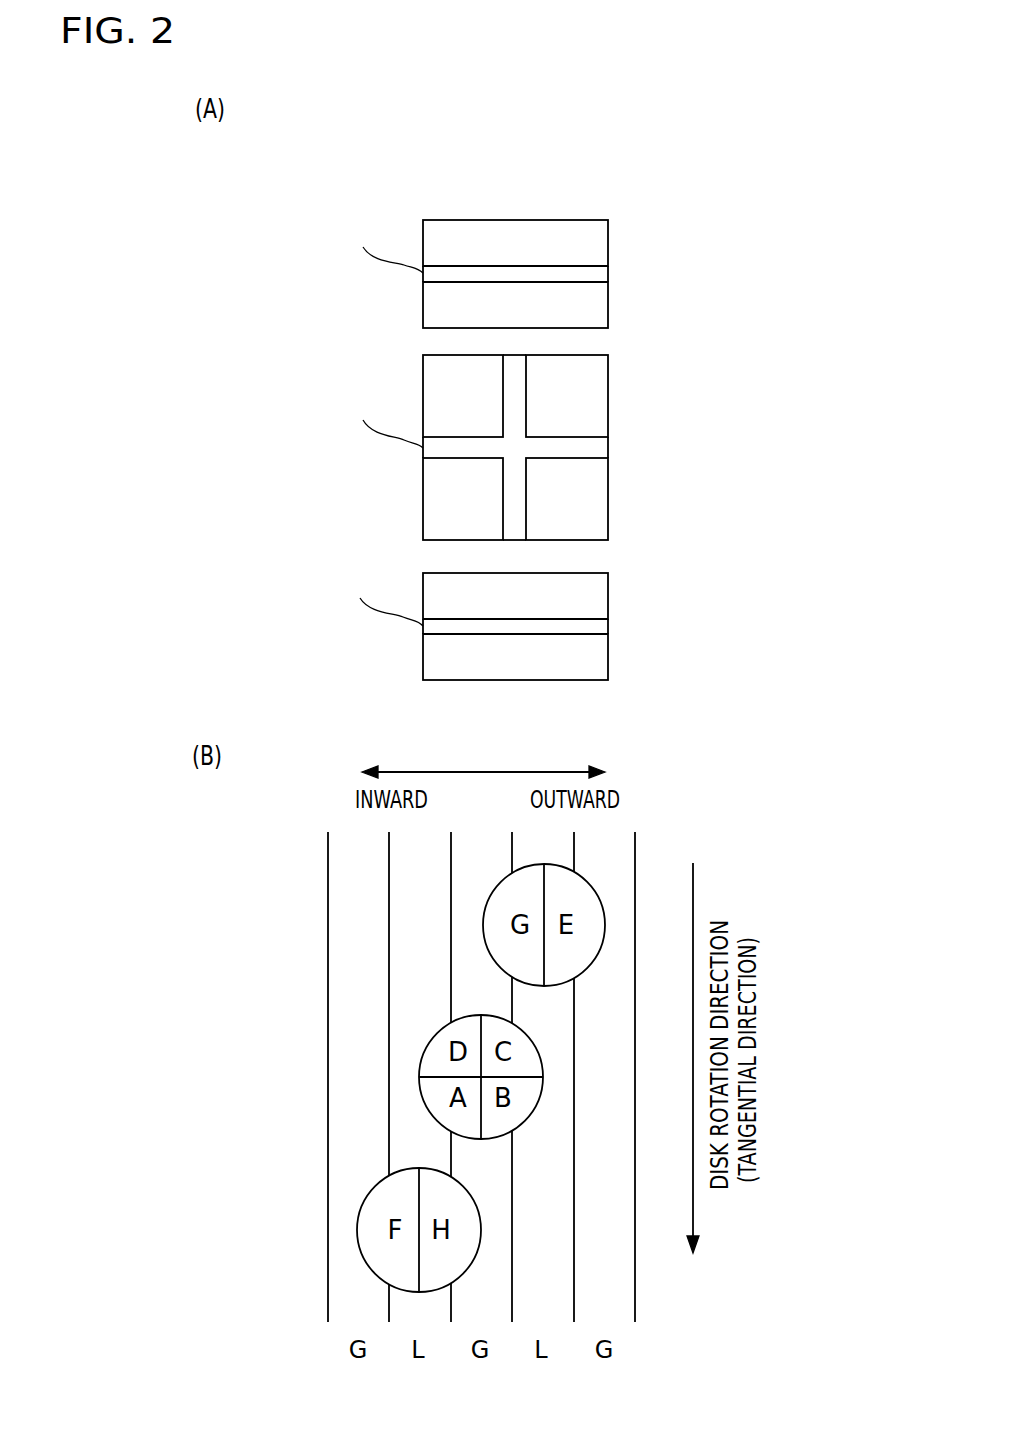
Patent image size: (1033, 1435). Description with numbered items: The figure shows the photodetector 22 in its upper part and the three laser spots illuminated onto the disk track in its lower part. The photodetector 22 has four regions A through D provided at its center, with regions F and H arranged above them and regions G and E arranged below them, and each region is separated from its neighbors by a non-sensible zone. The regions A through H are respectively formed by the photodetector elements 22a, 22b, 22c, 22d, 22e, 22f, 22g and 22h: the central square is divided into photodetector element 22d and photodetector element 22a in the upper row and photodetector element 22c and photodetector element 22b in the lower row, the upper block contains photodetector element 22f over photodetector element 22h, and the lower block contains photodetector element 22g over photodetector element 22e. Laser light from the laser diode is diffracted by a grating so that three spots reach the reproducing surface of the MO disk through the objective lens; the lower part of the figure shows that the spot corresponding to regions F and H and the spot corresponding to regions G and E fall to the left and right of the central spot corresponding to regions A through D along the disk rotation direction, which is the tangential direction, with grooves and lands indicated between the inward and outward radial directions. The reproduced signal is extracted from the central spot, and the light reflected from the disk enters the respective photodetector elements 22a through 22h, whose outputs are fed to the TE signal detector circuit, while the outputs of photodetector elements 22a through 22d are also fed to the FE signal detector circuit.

The photodetector 22 is at (407, 123).
The photodetector element 22a is at (608, 413).
The photodetector element 22b is at (608, 489).
The photodetector element 22c is at (423, 503).
The photodetector element 22d is at (423, 381).
The photodetector element 22e is at (423, 656).
The photodetector element 22f is at (578, 219).
The photodetector element 22g is at (608, 596).
The photodetector element 22h is at (608, 310).